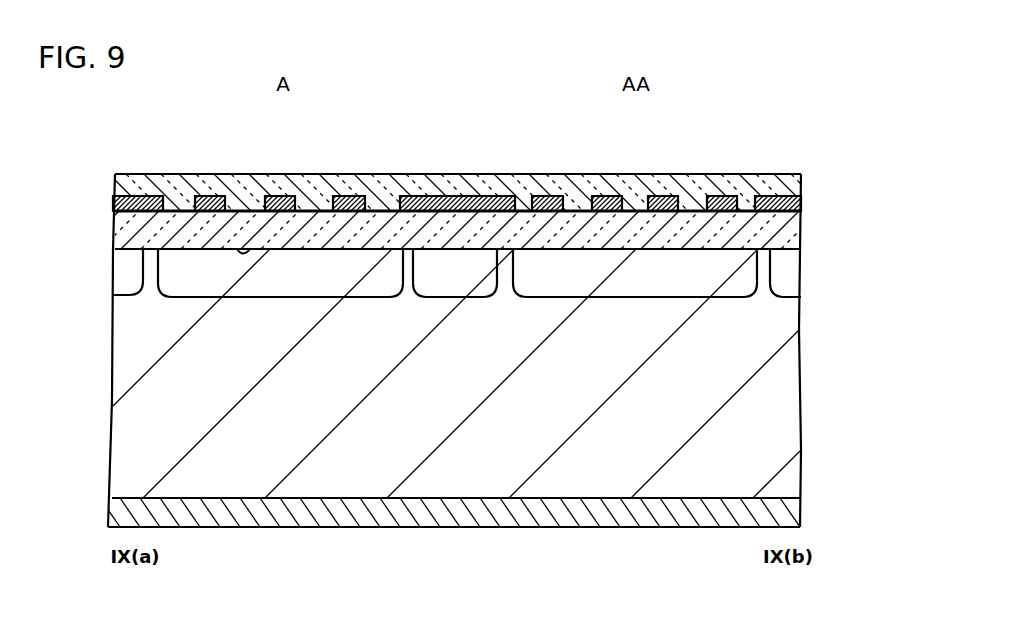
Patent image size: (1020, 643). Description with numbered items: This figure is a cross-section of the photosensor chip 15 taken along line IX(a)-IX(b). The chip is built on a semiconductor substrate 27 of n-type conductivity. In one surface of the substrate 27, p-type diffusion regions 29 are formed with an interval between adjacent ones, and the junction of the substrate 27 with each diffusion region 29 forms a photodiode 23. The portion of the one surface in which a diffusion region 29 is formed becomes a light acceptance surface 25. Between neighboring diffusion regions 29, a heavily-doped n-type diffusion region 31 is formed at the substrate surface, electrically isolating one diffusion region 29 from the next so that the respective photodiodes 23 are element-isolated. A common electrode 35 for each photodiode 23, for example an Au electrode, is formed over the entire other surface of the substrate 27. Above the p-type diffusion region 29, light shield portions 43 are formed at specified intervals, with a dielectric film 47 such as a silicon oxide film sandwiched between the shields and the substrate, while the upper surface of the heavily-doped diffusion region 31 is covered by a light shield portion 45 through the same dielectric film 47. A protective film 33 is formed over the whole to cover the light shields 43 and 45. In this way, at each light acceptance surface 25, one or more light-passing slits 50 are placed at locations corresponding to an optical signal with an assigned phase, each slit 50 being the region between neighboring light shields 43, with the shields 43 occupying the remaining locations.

The photosensor chip 15 is at (797, 158).
The photodiode 23 is at (234, 299).
The light acceptance surface 25 is at (251, 248).
The semiconductor substrate 27 is at (788, 415).
The p-type diffusion region 29 is at (300, 290).
The n+ type diffusion region 31 is at (447, 287).
The protective film 33 is at (802, 186).
The common electrode 35 is at (797, 516).
The light shield portion 43 is at (348, 197).
The light shield portion 45 is at (130, 176).
The dielectric film 47 is at (790, 228).
The slit 50 is at (319, 192).